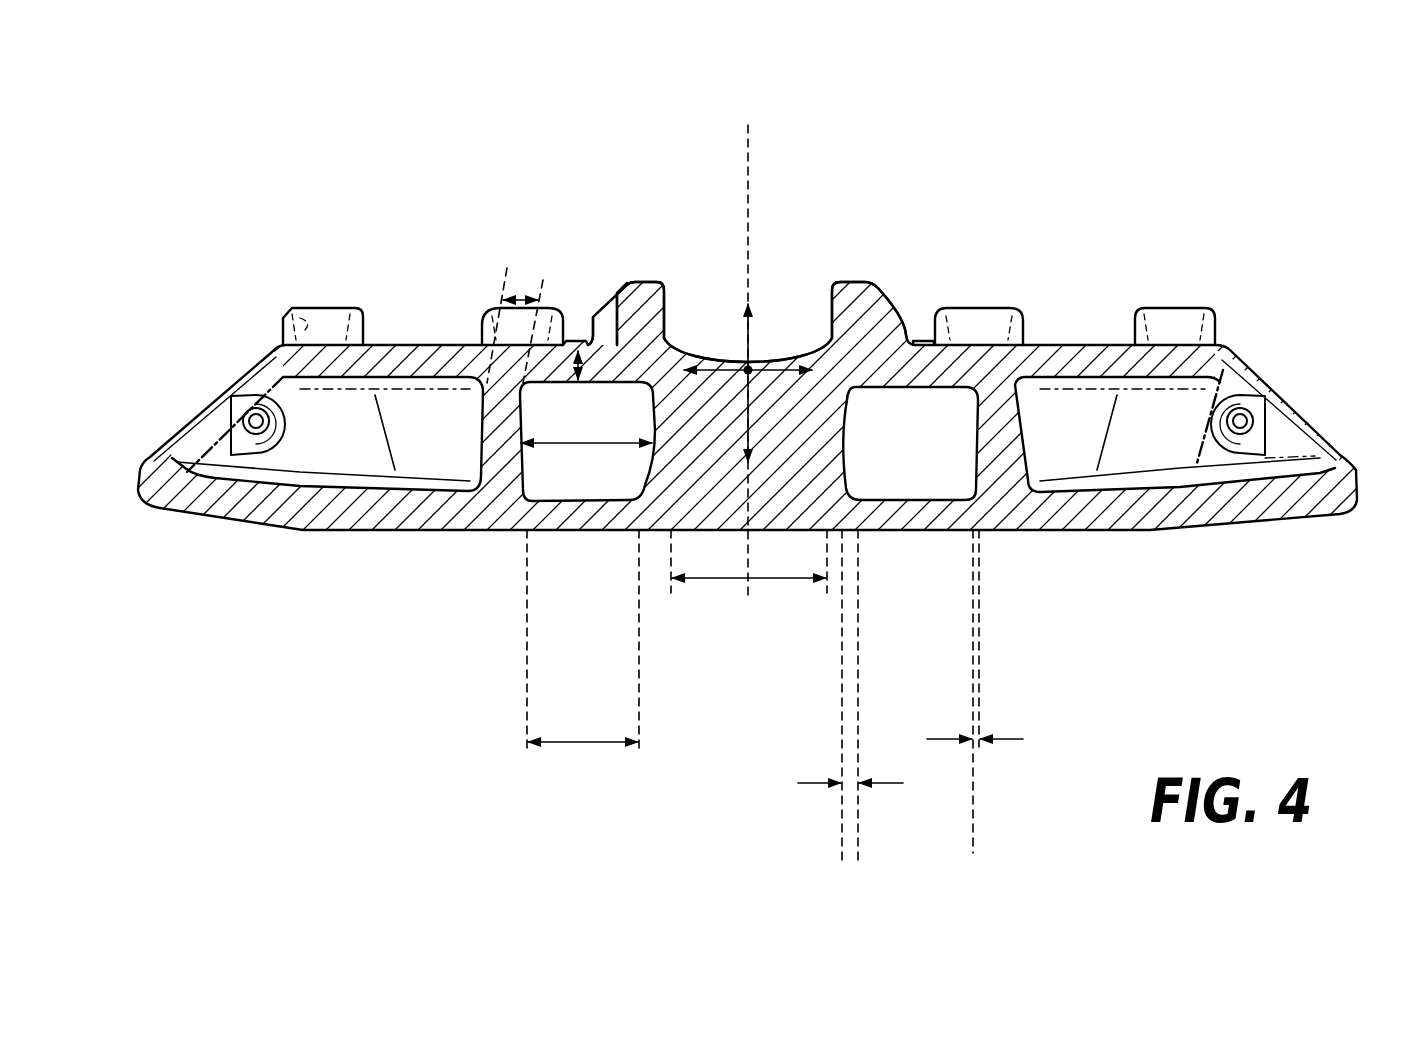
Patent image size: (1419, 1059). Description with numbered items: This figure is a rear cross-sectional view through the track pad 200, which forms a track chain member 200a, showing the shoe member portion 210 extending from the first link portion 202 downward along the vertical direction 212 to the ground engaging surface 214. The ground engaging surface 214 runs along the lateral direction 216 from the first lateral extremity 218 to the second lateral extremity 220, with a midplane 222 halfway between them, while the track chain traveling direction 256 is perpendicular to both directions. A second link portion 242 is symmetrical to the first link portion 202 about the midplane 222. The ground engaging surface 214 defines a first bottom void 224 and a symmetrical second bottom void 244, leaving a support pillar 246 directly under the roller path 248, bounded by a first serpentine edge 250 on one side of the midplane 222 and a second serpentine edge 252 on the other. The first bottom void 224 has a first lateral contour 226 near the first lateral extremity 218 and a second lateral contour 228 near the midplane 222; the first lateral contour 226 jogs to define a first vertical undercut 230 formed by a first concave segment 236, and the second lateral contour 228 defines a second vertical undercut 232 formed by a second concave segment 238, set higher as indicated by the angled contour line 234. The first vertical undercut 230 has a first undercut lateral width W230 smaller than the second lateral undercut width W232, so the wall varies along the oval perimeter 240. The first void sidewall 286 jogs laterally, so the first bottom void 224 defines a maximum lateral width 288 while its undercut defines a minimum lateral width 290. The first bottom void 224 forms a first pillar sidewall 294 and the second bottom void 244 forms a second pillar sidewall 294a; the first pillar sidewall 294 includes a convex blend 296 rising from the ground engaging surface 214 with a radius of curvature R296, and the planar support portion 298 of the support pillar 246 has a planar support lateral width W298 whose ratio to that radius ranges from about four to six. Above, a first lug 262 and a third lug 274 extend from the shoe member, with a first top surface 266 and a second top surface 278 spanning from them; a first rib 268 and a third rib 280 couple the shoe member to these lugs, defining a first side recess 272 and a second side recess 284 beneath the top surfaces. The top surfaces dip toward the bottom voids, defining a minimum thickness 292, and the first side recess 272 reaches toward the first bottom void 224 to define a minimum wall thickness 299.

The track chain member 200a is at (570, 150).
The track pad 200 is at (385, 250).
The first link portion 202 is at (1205, 280).
The shoe member portion 210 is at (1103, 545).
The vertical direction 212 is at (747, 425).
The ground engaging surface 214 is at (1140, 530).
The lateral direction 216 is at (753, 375).
The first lateral extremity 218 is at (1360, 487).
The second lateral extremity 220 is at (150, 503).
The midplane 222 is at (748, 160).
The first bottom void 224 is at (958, 505).
The first lateral contour 226 is at (979, 418).
The second lateral contour 228 is at (852, 427).
The first vertical undercut 230 is at (985, 482).
The second vertical undercut 232 is at (868, 505).
The angled contour line 234 is at (920, 497).
The first concave segment 236 is at (1014, 383).
The second concave segment 238 is at (842, 467).
The oval perimeter 240 is at (507, 533).
The second link portion 242 is at (322, 300).
The second bottom void 244 is at (620, 504).
The support pillar 246 is at (683, 433).
The roller path 248 is at (790, 390).
The first serpentine edge 250 is at (845, 395).
The second serpentine edge 252 is at (658, 343).
The track chain traveling direction 256 is at (760, 377).
The first lug 262 is at (1215, 322).
The first top surface 266 is at (948, 437).
The first rib 268 is at (1250, 378).
The first side recess 272 is at (1165, 437).
The third lug 274 is at (290, 312).
The second top surface 278 is at (513, 346).
The third rib 280 is at (205, 428).
The second side recess 284 is at (335, 437).
The first void sidewall 286 is at (972, 448).
The maximum lateral width 288 is at (584, 443).
The minimum lateral width 290 is at (576, 745).
The minimum thickness 292 is at (578, 348).
The first pillar sidewall 294 is at (803, 505).
The second pillar sidewall 294a is at (655, 474).
The convex blend 296 is at (526, 515).
The planar support portion 298 is at (720, 527).
The minimum wall thickness 299 is at (518, 298).
The radius of curvature R296 is at (523, 516).
The planar support lateral width W298 is at (733, 585).
The first undercut lateral width W230 is at (940, 737).
The second lateral undercut width W232 is at (812, 785).